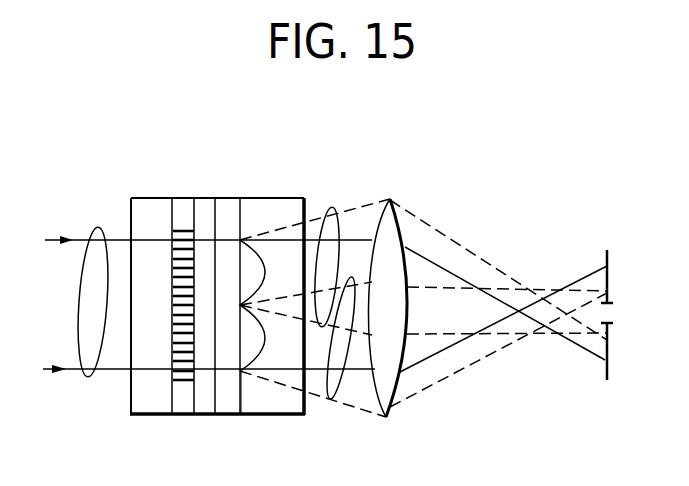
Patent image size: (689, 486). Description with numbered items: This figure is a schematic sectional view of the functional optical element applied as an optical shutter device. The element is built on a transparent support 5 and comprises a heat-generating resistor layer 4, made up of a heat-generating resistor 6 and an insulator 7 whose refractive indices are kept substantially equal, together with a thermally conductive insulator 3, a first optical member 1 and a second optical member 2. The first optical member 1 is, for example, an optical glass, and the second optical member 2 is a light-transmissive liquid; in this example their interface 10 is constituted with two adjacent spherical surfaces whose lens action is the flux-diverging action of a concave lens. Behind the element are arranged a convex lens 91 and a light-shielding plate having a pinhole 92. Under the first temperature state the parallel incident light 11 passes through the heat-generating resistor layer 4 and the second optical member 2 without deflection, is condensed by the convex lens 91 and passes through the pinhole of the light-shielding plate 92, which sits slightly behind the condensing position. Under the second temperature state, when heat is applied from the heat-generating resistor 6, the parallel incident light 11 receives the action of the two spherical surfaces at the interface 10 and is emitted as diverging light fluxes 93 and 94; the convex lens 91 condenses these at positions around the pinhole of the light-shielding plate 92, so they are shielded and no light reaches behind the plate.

The first optical member 1 is at (270, 208).
The second optical member 2 is at (232, 205).
The insulator having thermal conductivity 3 is at (208, 202).
The heat-generating resistor layer 4 is at (190, 197).
The support 5 is at (145, 198).
The heat-generating resistor 6 is at (176, 359).
The insulator 7 is at (178, 205).
The interface 10 is at (234, 398).
The parallel incident light 11 is at (98, 227).
The convex lens 91 is at (384, 419).
The light-shielding plate having pinhole 92 is at (604, 378).
The diverging light flux 93 is at (328, 207).
The diverging light flux 94 is at (331, 400).